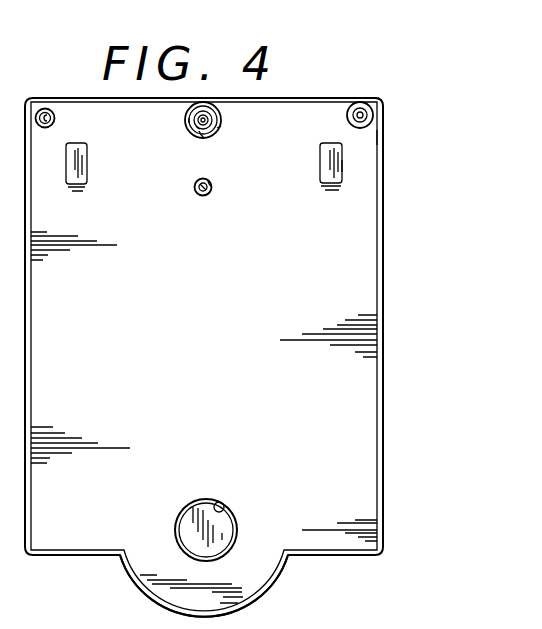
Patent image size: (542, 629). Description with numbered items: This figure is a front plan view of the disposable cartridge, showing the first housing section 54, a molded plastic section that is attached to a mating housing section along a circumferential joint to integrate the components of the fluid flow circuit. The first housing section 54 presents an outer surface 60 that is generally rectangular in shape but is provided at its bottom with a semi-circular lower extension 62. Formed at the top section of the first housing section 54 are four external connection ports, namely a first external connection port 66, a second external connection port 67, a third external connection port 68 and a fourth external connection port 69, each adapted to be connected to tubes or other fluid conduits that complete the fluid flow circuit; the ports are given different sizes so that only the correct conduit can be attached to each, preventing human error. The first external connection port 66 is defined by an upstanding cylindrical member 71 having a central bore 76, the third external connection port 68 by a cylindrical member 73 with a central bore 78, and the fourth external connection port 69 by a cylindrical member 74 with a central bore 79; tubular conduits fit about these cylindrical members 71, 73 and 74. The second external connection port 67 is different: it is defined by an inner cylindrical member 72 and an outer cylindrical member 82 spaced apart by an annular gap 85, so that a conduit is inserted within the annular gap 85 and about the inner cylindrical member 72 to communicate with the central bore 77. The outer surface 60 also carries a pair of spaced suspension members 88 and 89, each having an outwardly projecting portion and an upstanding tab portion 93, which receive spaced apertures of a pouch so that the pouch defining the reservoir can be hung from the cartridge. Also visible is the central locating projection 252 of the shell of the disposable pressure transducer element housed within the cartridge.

The first housing section 54 is at (385, 287).
The outer surface 60 is at (221, 503).
The semi-circular lower extension 62 is at (288, 580).
The first external connection port 66 is at (58, 115).
The second external connection port 67 is at (224, 118).
The third external connection port 68 is at (378, 100).
The fourth external connection port 69 is at (214, 180).
The cylindrical member 71 is at (42, 108).
The inner cylindrical member 72 is at (188, 119).
The cylindrical member 73 is at (372, 138).
The cylindrical member 74 is at (208, 197).
The central bore 76 is at (34, 114).
The central bore 77 is at (196, 127).
The central bore 78 is at (353, 102).
The central bore 79 is at (199, 195).
The outer cylindrical member 82 is at (222, 132).
The annular gap 85 is at (200, 132).
The suspension member 88 is at (89, 168).
The suspension member 89 is at (347, 165).
The upstanding tab portion 93 is at (318, 176).
The central locating projection 252 is at (228, 527).